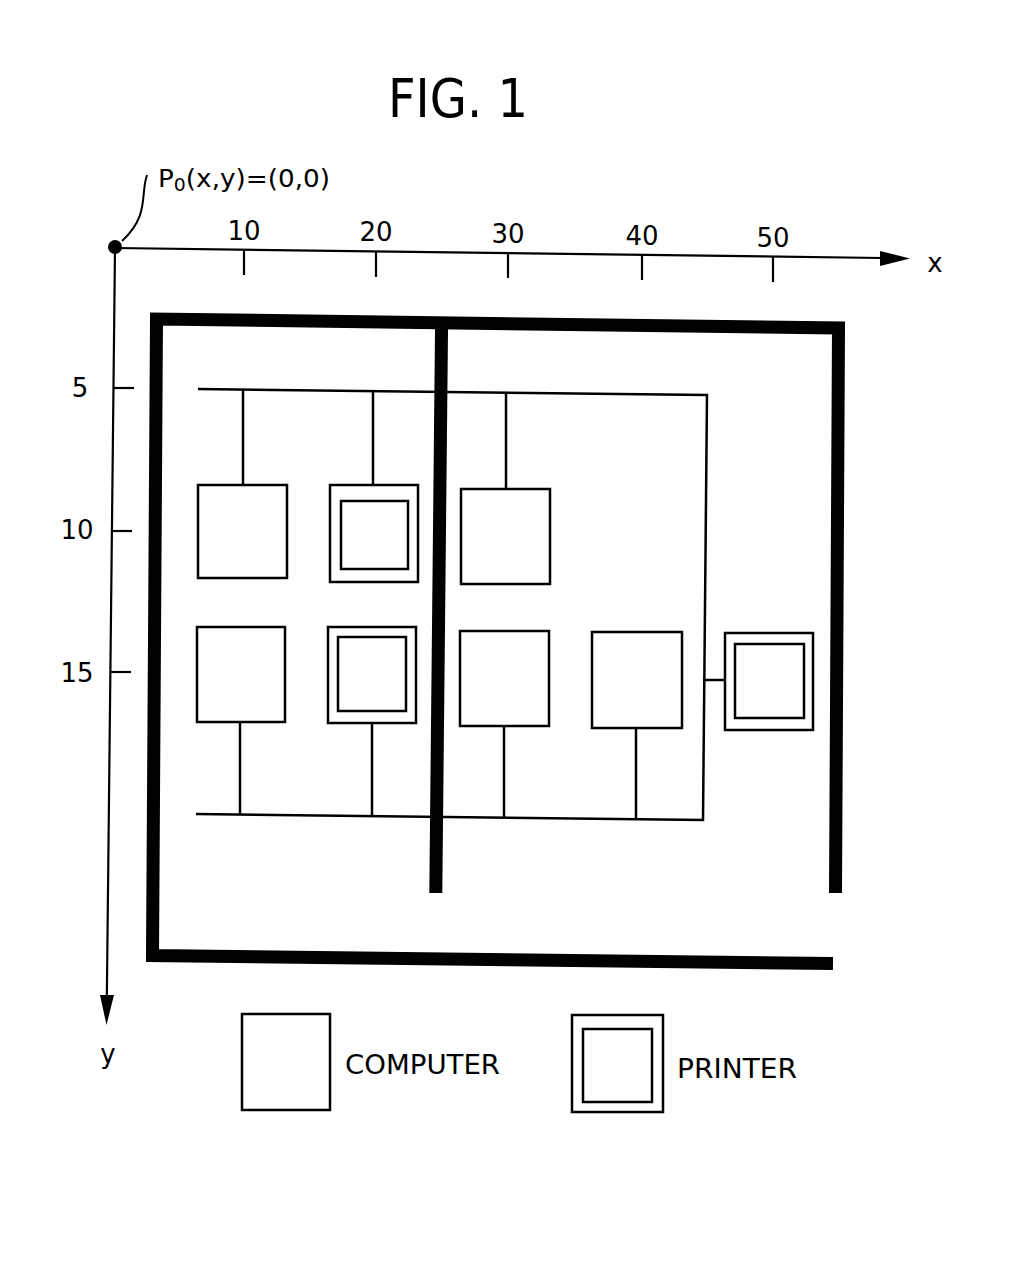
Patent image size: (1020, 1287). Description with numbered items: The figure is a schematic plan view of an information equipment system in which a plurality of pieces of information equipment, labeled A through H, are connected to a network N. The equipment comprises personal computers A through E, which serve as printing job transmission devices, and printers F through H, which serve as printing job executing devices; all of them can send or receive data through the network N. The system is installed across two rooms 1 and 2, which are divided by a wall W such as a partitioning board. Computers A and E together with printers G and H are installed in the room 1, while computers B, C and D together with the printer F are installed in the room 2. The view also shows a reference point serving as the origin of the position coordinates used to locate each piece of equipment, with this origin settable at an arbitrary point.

The room 1 is at (183, 363).
The room 2 is at (797, 409).
The network N is at (705, 513).
The wall W is at (843, 575).